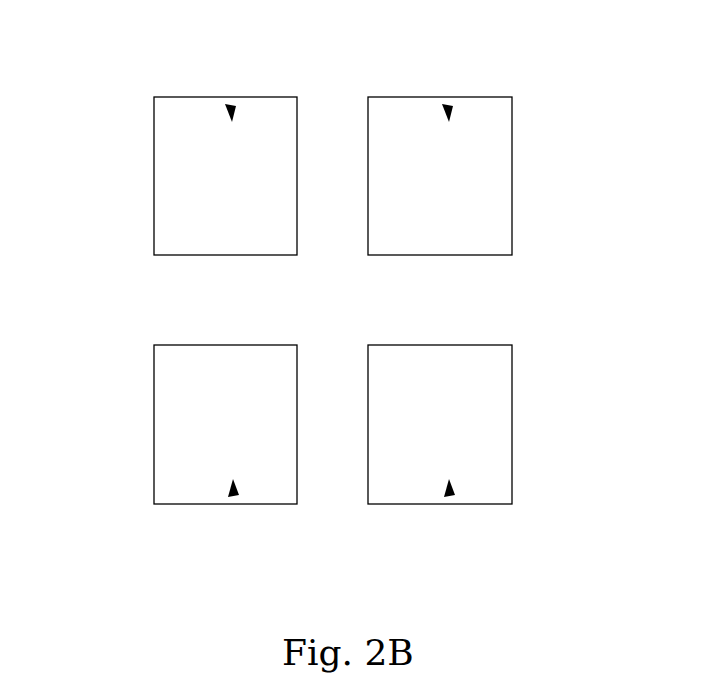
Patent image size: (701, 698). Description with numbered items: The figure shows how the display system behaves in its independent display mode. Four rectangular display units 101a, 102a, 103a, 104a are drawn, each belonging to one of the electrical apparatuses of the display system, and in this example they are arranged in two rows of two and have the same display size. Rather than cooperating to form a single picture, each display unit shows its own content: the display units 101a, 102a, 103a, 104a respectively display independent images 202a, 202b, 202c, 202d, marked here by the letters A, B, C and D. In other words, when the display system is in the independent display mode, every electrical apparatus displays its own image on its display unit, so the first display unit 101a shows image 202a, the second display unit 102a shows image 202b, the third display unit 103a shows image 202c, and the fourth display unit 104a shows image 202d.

The display unit 101a is at (154, 163).
The display unit 102a is at (512, 165).
The display unit 103a is at (154, 422).
The display unit 104a is at (512, 423).
The independent image 202a is at (231, 112).
The independent image 202b is at (448, 112).
The independent image 202c is at (231, 489).
The independent image 202d is at (447, 489).